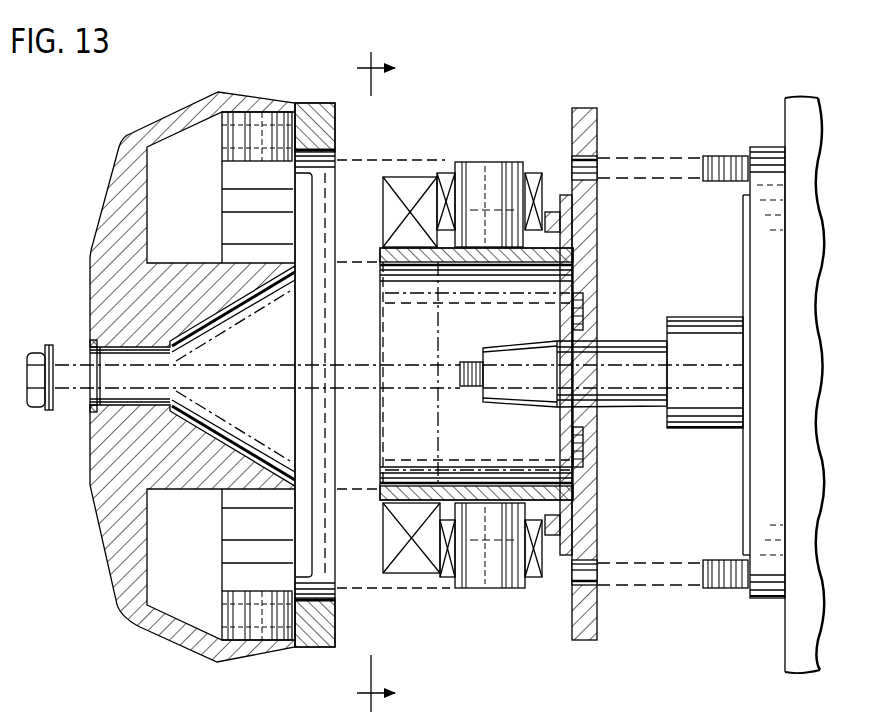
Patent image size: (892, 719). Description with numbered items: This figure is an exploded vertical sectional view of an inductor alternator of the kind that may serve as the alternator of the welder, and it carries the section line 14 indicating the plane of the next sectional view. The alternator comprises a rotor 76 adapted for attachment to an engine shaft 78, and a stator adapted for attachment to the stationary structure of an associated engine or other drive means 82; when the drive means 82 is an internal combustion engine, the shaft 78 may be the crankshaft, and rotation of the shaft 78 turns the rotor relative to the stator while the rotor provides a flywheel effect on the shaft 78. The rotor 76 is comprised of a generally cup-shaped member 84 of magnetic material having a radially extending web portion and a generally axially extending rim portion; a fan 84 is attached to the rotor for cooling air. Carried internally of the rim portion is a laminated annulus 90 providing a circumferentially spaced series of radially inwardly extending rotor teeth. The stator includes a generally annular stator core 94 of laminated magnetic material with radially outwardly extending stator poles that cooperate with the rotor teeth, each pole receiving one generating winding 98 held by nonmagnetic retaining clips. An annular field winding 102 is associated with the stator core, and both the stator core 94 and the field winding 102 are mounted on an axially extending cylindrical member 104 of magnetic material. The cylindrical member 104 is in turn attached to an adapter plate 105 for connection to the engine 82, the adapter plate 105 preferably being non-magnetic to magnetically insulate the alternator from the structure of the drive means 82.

The rotor 76 is at (247, 86).
The cup-shaped member 84 is at (308, 110).
The laminated annulus 90 is at (230, 143).
The field winding 102 is at (403, 186).
The stator core 94 is at (478, 178).
The generating winding 98 is at (536, 176).
The cylindrical member 104 is at (384, 252).
The adapter plate 105 is at (592, 135).
The engine shaft 78 is at (613, 363).
The drive means 82 is at (807, 282).
The section line 14- 14 is at (393, 382).